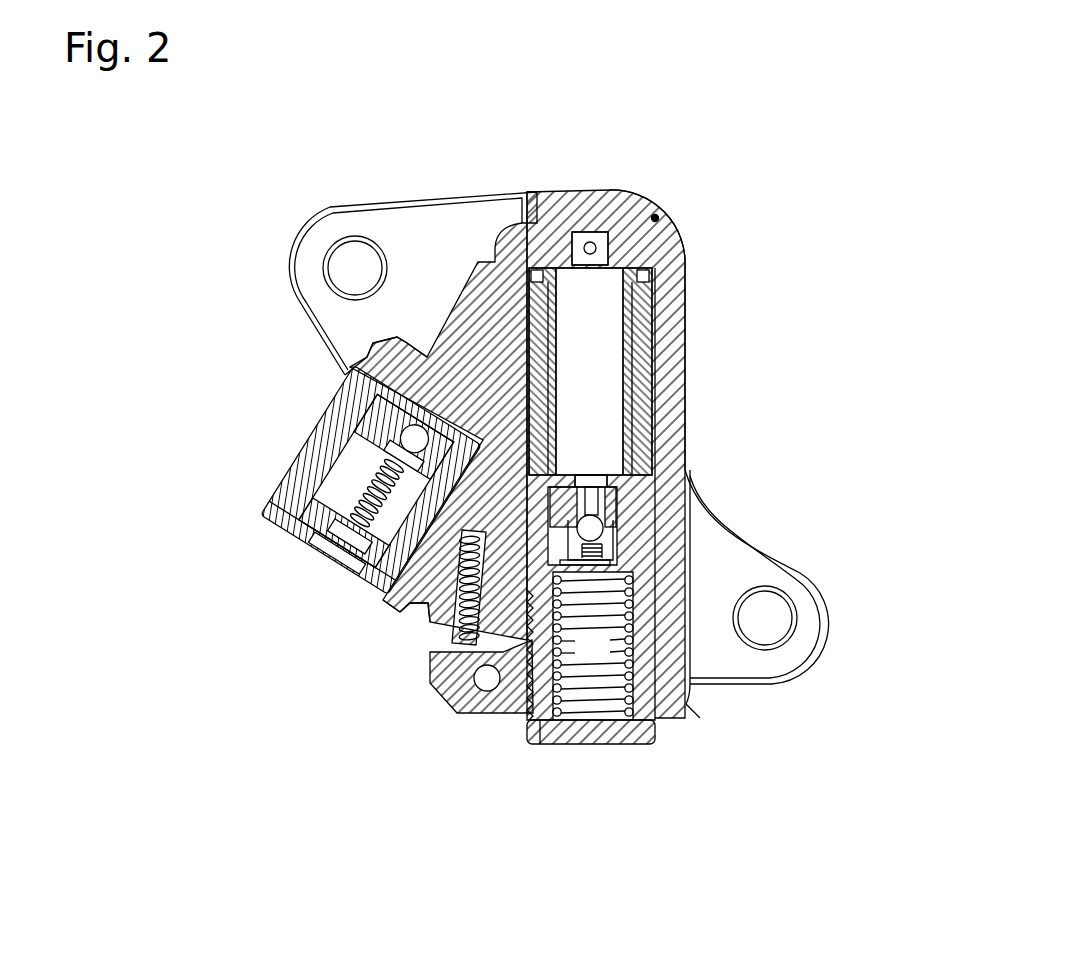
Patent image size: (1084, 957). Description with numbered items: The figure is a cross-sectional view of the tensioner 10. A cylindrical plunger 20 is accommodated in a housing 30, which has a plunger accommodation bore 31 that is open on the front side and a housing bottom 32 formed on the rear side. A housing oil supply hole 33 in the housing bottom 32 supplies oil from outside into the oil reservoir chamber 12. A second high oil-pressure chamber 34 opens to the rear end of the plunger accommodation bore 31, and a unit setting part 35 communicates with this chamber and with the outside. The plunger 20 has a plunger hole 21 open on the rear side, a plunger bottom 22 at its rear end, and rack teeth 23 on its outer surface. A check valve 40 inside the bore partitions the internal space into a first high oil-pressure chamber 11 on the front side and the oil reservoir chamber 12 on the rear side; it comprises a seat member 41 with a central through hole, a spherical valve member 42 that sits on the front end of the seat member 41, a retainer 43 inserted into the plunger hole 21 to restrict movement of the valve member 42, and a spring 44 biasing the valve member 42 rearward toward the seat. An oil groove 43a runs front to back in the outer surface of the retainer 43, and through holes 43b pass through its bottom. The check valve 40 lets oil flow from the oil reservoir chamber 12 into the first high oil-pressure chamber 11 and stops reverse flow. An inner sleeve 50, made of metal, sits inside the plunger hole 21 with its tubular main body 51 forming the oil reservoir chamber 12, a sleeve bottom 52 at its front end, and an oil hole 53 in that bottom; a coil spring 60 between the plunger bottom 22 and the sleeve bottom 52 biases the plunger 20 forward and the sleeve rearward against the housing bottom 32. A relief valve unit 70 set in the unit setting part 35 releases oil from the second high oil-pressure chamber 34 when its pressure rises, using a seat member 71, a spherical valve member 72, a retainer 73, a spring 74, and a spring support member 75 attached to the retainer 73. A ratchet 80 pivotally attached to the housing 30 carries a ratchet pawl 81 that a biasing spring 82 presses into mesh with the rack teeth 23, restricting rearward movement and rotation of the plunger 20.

The tensioner 10 is at (262, 203).
The first high oil-pressure chamber 11 is at (602, 655).
The oil reservoir chamber 12 is at (602, 382).
The plunger 20 is at (573, 460).
The plunger hole 21 is at (552, 745).
The plunger bottom 22 is at (598, 740).
The rack teeth 23 is at (528, 737).
The housing 30 is at (553, 460).
The plunger accommodation bore 31 is at (665, 315).
The housing bottom 32 is at (660, 217).
The housing oil supply hole 33 is at (592, 240).
The second high oil-pressure chamber 34 is at (500, 356).
The unit setting part 35 is at (362, 352).
The check valve 40 is at (740, 493).
The seat member 41 is at (612, 500).
The valve member 42 is at (608, 525).
The retainer 43 is at (598, 568).
The oil groove 43a is at (437, 592).
The through holes 43b is at (675, 597).
The spring 44 is at (610, 560).
The inner sleeve 50 is at (678, 377).
The tubular main body 51 is at (640, 352).
The sleeve bottom 52 is at (590, 478).
The oil hole 53 is at (632, 380).
The coil spring 60 is at (700, 700).
The relief valve unit 70 is at (317, 471).
The seat member 71 is at (352, 390).
The valve member 72 is at (412, 444).
The retainer 73 is at (318, 518).
The spring 74 is at (362, 483).
The spring support member 75 is at (292, 546).
The ratchet 80 is at (420, 670).
The ratchet pawl 81 is at (462, 716).
The biasing spring 82 is at (452, 643).